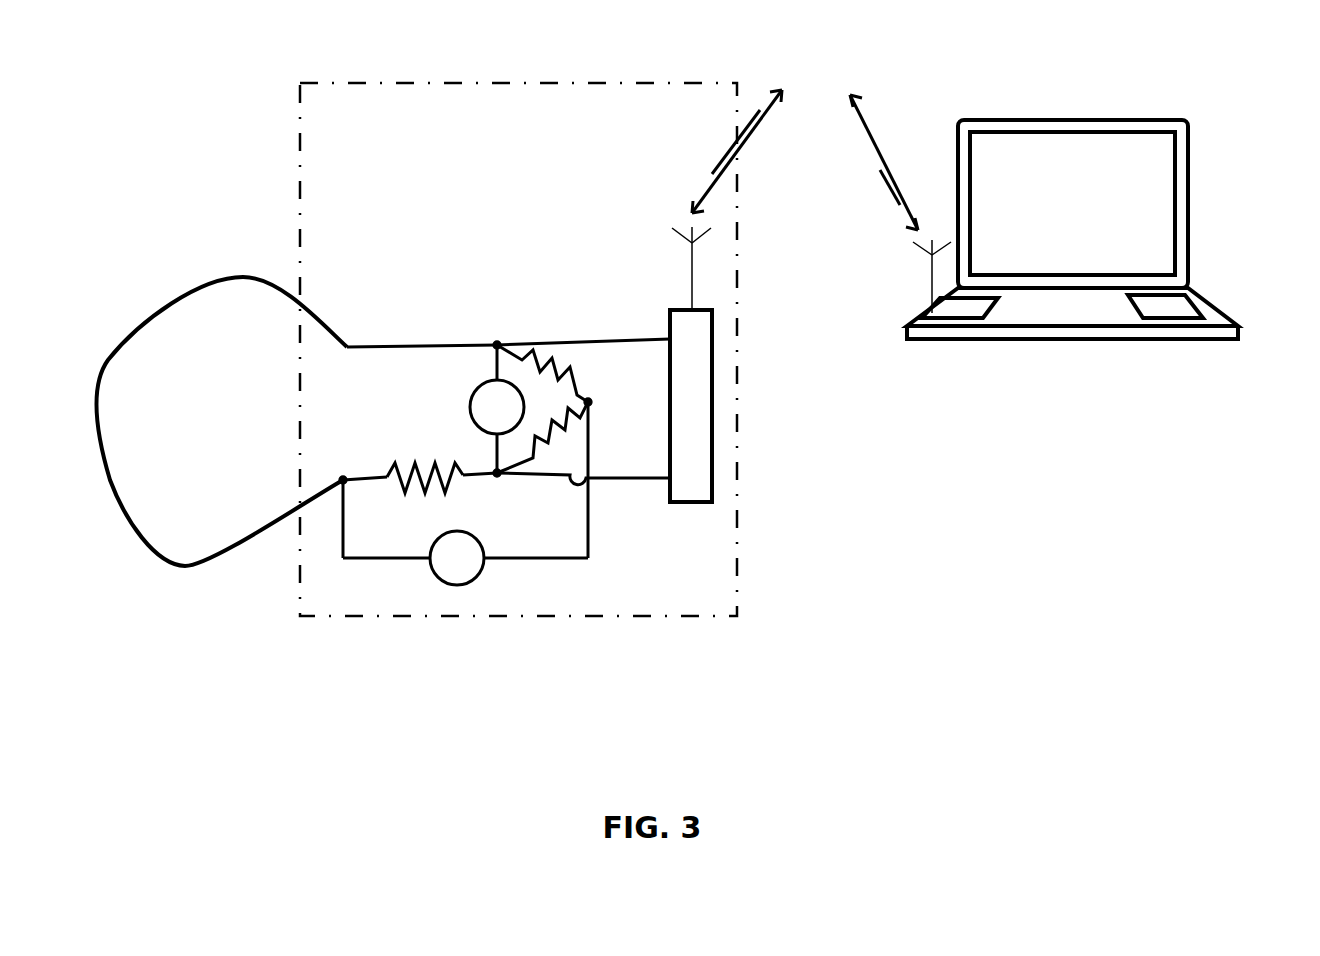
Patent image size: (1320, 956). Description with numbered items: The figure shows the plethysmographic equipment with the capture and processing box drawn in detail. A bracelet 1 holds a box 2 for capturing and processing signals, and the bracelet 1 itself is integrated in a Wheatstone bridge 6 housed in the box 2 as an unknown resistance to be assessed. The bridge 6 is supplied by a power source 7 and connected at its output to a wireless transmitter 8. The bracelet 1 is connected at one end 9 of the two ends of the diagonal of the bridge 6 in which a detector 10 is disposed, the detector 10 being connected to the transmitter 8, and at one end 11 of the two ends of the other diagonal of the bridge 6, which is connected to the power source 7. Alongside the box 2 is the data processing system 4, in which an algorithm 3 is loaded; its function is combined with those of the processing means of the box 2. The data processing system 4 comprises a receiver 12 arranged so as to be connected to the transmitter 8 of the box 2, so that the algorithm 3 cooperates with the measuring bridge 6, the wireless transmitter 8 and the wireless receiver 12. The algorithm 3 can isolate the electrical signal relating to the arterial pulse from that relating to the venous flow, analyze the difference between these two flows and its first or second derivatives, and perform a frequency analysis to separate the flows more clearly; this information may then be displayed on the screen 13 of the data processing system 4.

The bracelet 1 is at (142, 540).
The box 2 is at (318, 129).
The algorithm 3 is at (1178, 302).
The data processing system 4 is at (1178, 272).
The Wheatstone bridge 6 is at (402, 420).
The power source 7 is at (457, 562).
The wireless transmitter 8 is at (692, 393).
The end of the diagonal of the bridge 9 is at (497, 345).
The detector 10 is at (493, 407).
The end of the other diagonal of the bridge 11 is at (340, 487).
The receiver 12 is at (948, 313).
The screen 13 is at (1118, 174).